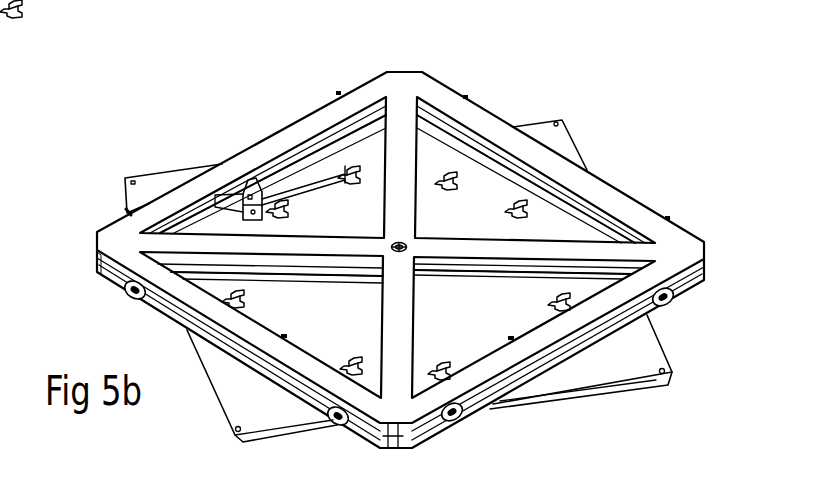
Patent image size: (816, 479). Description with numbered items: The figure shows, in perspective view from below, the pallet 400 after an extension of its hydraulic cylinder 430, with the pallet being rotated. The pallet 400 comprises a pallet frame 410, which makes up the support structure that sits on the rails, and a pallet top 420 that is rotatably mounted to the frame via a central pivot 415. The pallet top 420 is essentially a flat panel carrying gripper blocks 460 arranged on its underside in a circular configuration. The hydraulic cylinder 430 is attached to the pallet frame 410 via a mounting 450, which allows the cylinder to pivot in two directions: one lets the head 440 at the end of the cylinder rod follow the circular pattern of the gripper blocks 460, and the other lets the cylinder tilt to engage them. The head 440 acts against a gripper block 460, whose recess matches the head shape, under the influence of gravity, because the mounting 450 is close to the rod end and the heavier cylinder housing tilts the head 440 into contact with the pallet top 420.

The pallet 400 is at (697, 343).
The pallet frame 410 is at (605, 193).
The central pivot 415 is at (402, 257).
The pallet top 420 is at (490, 187).
The hydraulic cylinder 430 is at (220, 220).
The head 440 is at (346, 168).
The mounting 450 is at (238, 185).
The gripper blocks 460 is at (443, 172).